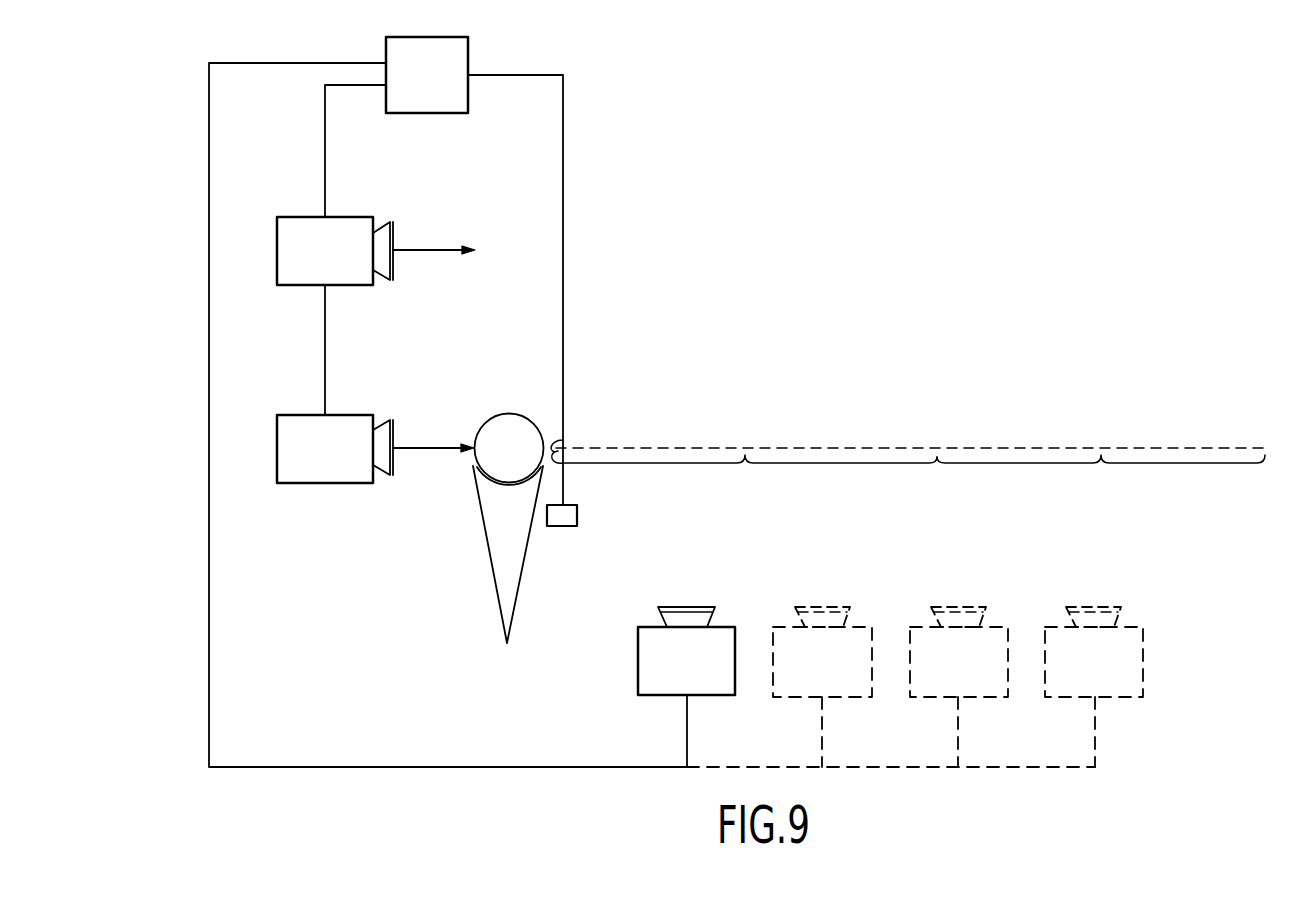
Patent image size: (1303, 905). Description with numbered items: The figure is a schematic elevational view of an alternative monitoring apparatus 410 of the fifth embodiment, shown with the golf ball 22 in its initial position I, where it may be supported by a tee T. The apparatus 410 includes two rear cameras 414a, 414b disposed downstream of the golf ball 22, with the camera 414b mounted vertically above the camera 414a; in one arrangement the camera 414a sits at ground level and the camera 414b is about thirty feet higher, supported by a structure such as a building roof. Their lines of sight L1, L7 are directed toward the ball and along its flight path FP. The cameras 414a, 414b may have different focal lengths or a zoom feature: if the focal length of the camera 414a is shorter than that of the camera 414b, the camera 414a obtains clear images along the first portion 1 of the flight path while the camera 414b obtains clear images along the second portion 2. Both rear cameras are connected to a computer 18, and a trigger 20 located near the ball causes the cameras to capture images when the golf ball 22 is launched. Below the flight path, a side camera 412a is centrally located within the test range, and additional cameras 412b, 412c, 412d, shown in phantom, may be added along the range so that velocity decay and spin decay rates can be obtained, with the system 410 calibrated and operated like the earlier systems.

The monitoring apparatus 410 is at (952, 160).
The computer 18 is at (468, 47).
The upper rear camera 414b is at (363, 217).
The print head output L7 is at (432, 250).
The lower rear camera 414a is at (363, 415).
The print head output L1 is at (432, 448).
The initial position I is at (508, 413).
The tee T is at (482, 501).
The golf ball 22 is at (540, 433).
The trigger 20 is at (577, 512).
The feed path FP is at (933, 448).
The first portion of the flight path 1 is at (750, 481).
The second portion of the flight path 2 is at (1101, 481).
The side camera 412a is at (718, 697).
The additional side camera 412b is at (865, 697).
The additional side camera 412c is at (1000, 697).
The additional side camera 412d is at (1133, 697).